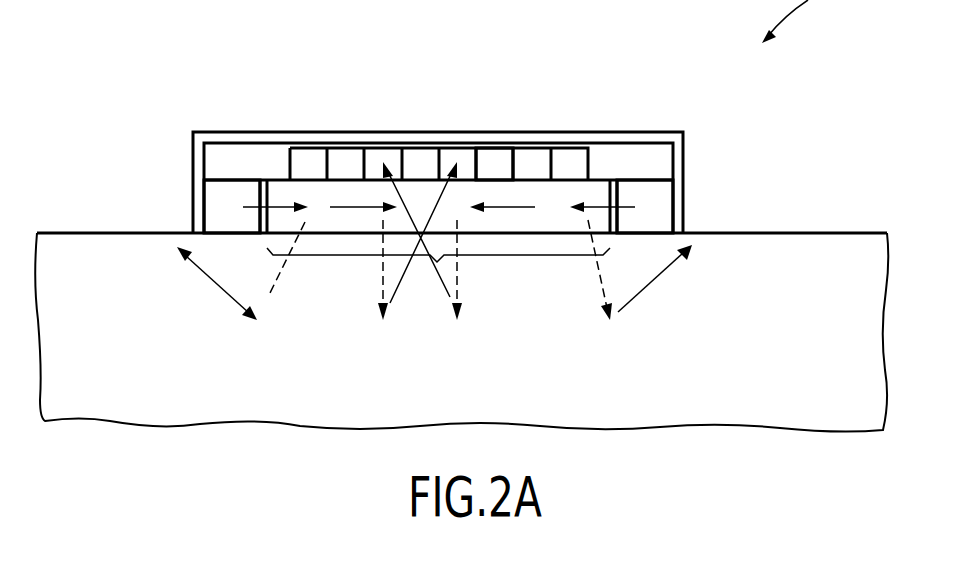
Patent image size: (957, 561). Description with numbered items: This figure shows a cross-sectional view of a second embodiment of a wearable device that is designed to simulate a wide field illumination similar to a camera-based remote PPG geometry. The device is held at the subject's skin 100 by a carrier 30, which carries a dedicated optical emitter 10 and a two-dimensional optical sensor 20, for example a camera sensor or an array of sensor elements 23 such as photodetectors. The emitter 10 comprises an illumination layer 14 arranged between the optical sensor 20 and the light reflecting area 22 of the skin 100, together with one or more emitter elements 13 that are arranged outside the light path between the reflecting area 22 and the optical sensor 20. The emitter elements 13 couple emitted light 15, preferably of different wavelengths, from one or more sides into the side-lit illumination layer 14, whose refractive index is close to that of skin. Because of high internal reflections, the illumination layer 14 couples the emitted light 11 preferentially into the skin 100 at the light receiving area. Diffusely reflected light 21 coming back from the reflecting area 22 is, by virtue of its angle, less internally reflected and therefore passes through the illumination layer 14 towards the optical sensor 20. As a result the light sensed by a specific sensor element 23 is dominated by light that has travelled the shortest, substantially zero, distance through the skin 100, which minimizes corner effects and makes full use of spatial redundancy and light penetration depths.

The optical emitter 10 is at (182, 134).
The emitted light 11 is at (278, 278).
The emitter elements 13 is at (218, 197).
The illumination layer 14 is at (269, 181).
The emitted light coupled into the illumination layer 15 is at (246, 207).
The optical sensor 20 is at (590, 160).
The scattered light 21 is at (435, 280).
The light reflecting area 22 is at (437, 273).
The sensor elements 23 is at (493, 163).
The carrier 30 is at (417, 143).
The skin 100 is at (796, 256).